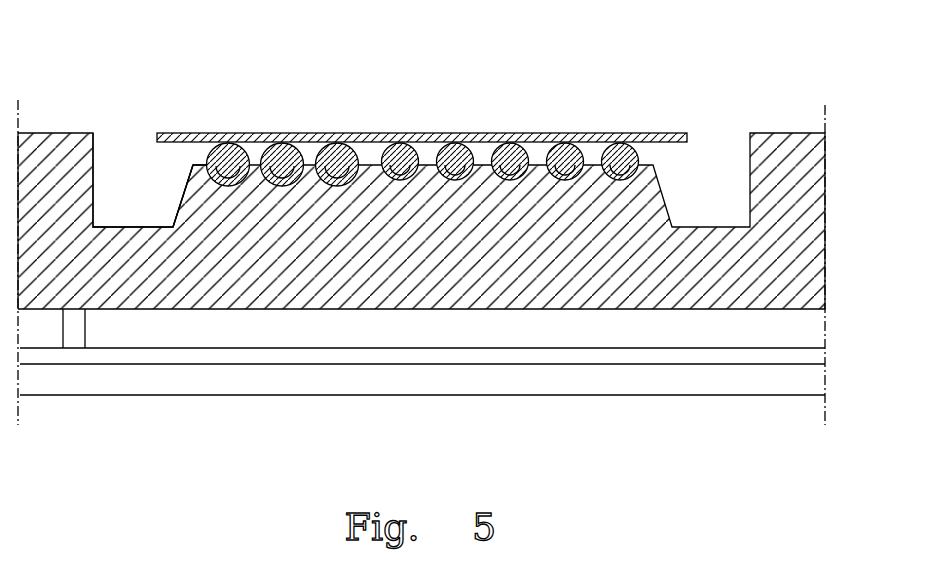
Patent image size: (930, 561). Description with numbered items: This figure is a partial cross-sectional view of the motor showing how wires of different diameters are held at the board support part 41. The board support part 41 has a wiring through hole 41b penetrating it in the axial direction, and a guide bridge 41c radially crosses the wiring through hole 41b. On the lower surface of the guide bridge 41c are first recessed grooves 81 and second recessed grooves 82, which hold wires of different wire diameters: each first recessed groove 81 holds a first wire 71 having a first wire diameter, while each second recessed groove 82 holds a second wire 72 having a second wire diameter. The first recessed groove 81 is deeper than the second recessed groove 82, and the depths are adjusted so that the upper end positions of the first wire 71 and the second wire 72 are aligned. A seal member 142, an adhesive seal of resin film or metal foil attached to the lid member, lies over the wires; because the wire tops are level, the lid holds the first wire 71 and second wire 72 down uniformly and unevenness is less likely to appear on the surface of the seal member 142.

The board support part 41 is at (777, 133).
The wiring through hole 41b is at (97, 172).
The guide bridge 41c is at (197, 197).
The seal member 142 is at (660, 133).
The first wire 71 is at (230, 160).
The second wire 72 is at (398, 155).
The first recessed groove 81 is at (233, 183).
The second recessed groove 82 is at (392, 172).